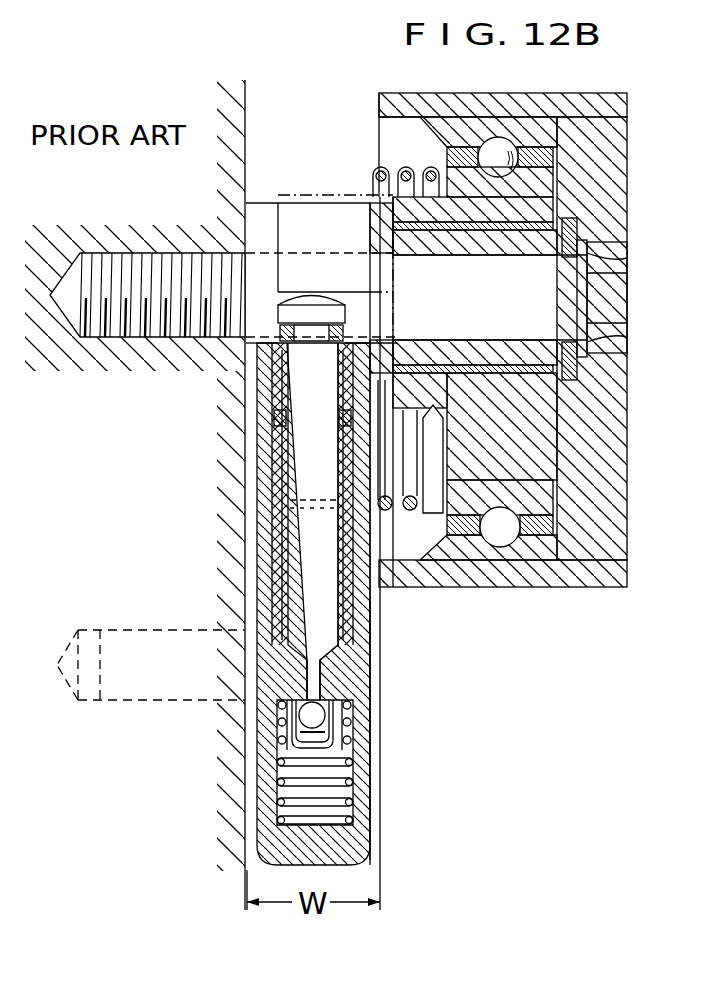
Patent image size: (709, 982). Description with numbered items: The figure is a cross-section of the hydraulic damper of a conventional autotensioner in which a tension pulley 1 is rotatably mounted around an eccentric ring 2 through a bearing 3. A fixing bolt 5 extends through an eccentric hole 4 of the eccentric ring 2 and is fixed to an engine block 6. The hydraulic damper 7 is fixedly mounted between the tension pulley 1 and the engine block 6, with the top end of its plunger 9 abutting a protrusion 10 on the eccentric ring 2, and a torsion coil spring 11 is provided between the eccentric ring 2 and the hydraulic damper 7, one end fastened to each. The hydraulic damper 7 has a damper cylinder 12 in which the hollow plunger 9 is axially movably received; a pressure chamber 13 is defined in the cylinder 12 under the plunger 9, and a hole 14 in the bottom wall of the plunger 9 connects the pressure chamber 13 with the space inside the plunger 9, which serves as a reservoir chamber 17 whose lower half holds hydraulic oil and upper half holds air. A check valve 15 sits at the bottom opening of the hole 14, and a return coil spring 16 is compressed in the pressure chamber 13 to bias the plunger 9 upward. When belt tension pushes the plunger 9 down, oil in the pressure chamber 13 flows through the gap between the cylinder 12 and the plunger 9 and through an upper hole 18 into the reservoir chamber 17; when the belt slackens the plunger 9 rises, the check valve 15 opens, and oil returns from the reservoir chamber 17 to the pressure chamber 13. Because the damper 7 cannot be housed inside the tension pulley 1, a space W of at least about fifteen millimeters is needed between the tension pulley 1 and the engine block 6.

The tension pulley 1 is at (462, 98).
The eccentric ring 2 is at (520, 432).
The bearing 3 is at (497, 140).
The eccentric hole 4 is at (547, 203).
The fixing bolt 5 is at (550, 300).
The engine block 6 is at (245, 100).
The hydraulic damper 7 is at (376, 655).
The plunger 9 is at (345, 605).
The protrusion 10 is at (318, 197).
The torsion coil spring 11 is at (403, 167).
The damper cylinder 12 is at (262, 576).
The pressure chamber 13 is at (343, 771).
The hole 14 is at (314, 676).
The check valve 15 is at (317, 716).
The return coil spring 16 is at (345, 804).
The reservoir chamber 17 is at (303, 387).
The upper hole 18 is at (275, 450).